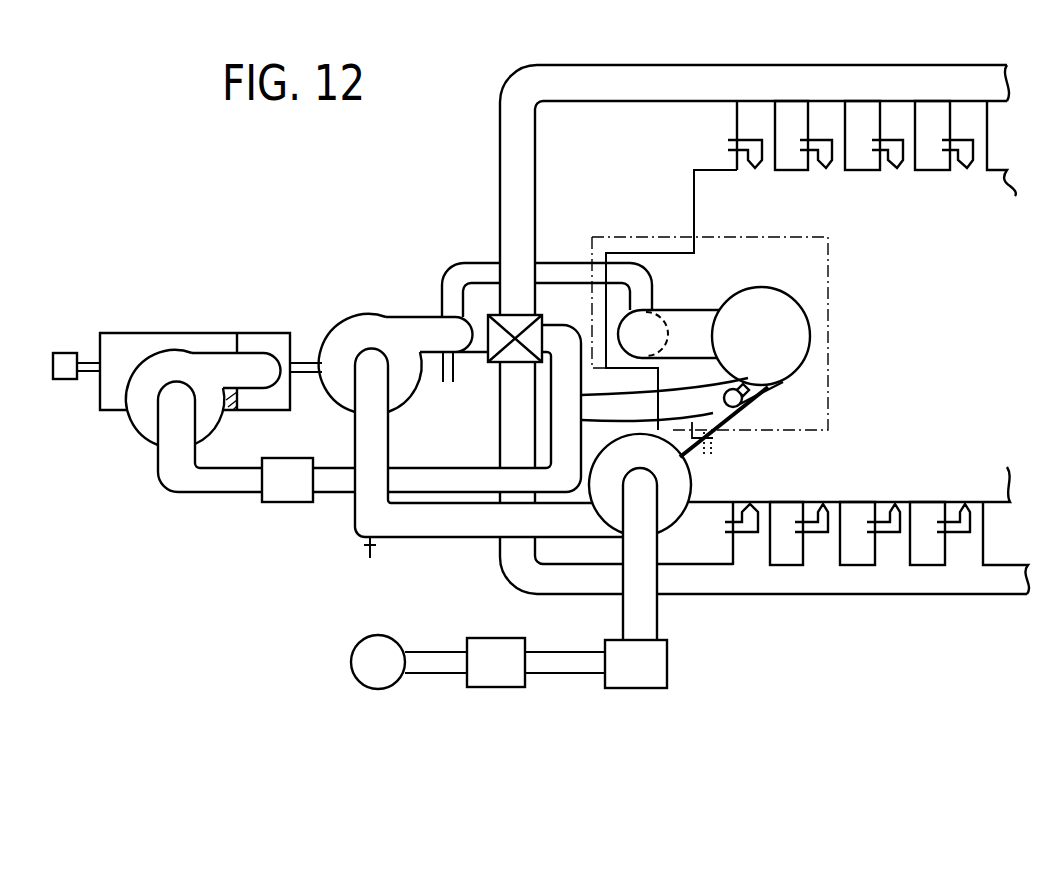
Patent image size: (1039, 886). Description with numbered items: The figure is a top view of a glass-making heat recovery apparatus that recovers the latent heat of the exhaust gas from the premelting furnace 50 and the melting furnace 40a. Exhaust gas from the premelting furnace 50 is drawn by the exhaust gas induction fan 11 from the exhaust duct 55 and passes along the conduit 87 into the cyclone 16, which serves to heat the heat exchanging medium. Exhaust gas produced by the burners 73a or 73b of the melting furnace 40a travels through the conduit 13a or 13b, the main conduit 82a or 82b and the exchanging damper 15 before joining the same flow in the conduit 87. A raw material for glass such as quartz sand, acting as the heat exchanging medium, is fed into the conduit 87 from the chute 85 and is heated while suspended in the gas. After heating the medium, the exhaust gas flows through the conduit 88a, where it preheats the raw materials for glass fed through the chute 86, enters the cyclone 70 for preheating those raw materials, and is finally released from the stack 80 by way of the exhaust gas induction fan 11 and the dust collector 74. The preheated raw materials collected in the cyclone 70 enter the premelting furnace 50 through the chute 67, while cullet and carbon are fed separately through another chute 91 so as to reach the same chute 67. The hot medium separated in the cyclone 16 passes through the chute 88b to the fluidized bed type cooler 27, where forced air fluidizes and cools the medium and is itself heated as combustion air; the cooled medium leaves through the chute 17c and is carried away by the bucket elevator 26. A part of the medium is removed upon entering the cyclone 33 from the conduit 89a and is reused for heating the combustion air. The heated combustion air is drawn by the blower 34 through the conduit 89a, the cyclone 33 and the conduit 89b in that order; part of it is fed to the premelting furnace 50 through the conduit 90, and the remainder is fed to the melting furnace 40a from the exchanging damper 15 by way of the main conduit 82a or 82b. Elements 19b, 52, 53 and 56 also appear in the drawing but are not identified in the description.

The exhaust gas induction fan 11 is at (660, 666).
The conduit 13a is at (826, 106).
The conduit 13b is at (753, 548).
The exchanging damper 15 is at (518, 355).
The cyclone 16 is at (362, 340).
The discharging chute 17c is at (87, 373).
The pipe 19b is at (483, 482).
The bucket elevator 26 is at (64, 352).
The fluidized bed type cooler 27 is at (138, 338).
The cyclone 33 is at (142, 418).
The blower 34 is at (283, 487).
The melting furnace 40a is at (733, 195).
The premelting furnace 50 is at (805, 272).
The cam 52 is at (783, 305).
The cylinder 53 is at (697, 335).
The exhaust duct 55 is at (567, 270).
The piston 56 is at (660, 318).
The chute 67 is at (730, 418).
The cyclone 70 is at (692, 483).
The burners 73a is at (758, 172).
The burners 73b is at (751, 504).
The dust collector 74 is at (490, 653).
The stack 80 is at (373, 645).
The main conduit 82a is at (645, 65).
The main conduit 82b is at (676, 585).
The chute 85 is at (448, 366).
The chute 86 is at (376, 545).
The conduit 87 is at (418, 325).
The conduit 88a is at (380, 441).
The chute 88b is at (303, 374).
The conduit 89a is at (213, 360).
The conduit 89b is at (190, 492).
The conduit 90 is at (614, 413).
The chute 91 is at (715, 438).